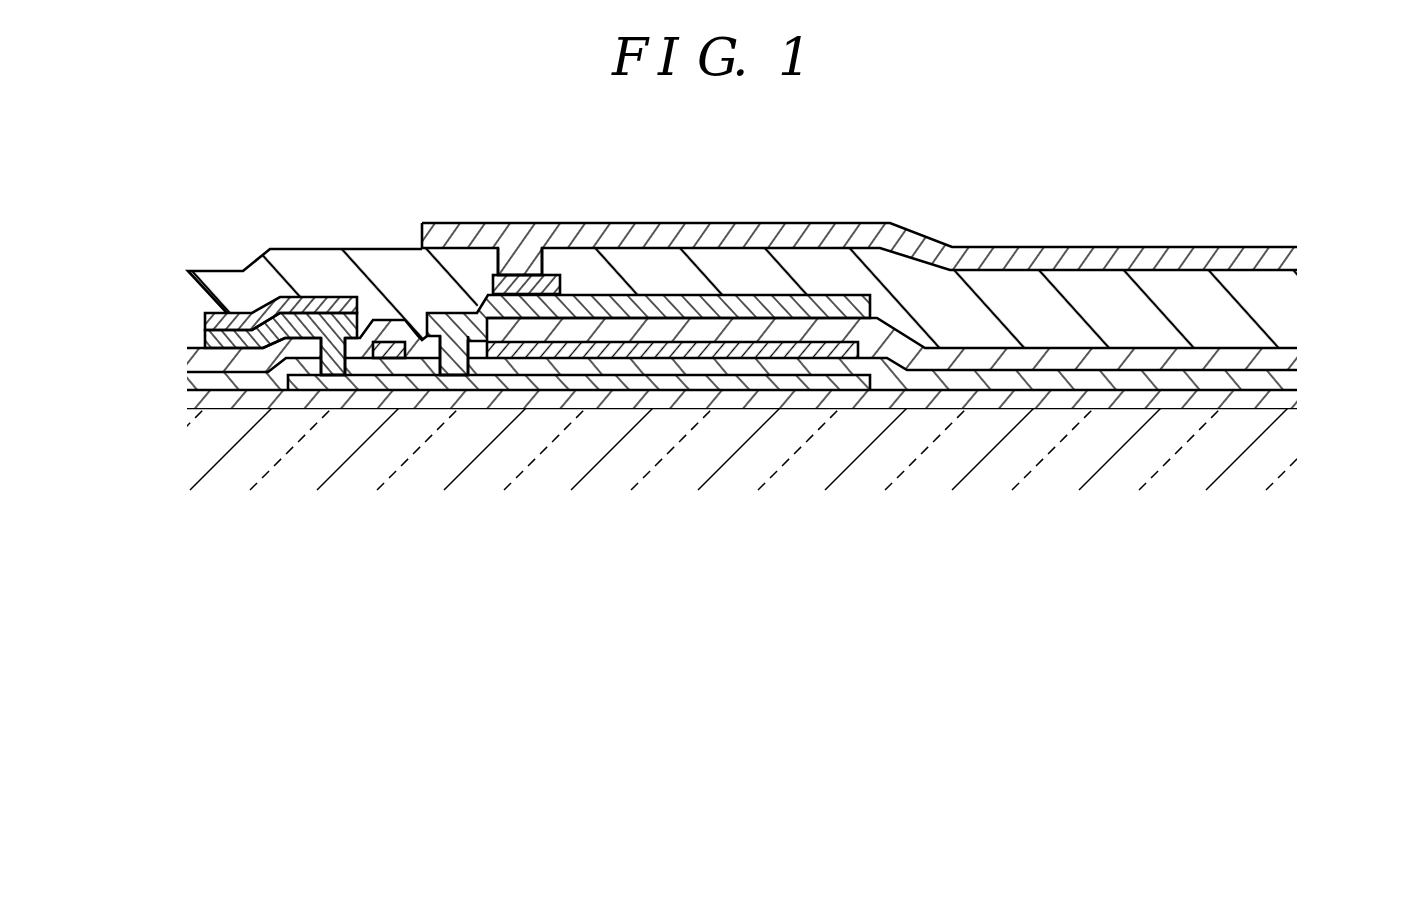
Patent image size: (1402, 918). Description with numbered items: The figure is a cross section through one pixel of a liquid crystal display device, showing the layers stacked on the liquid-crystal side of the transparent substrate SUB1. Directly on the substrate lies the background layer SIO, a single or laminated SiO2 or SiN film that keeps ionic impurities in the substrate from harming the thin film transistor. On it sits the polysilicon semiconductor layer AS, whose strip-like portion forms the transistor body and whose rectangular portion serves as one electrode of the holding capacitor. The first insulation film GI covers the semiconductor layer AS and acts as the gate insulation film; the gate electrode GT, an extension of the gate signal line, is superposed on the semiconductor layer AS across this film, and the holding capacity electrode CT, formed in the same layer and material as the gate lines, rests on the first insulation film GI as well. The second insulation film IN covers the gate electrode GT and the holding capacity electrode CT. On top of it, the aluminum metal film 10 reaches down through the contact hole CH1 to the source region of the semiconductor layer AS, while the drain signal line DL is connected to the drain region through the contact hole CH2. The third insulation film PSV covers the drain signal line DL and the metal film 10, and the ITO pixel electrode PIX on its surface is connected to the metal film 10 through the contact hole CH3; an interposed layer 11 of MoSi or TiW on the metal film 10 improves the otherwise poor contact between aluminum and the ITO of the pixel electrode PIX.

The transparent substrate SUB1 is at (197, 458).
The background layer SIO is at (1295, 398).
The first insulation film GI is at (1297, 376).
The semiconductor layer AS is at (848, 385).
The gate electrode GT is at (388, 360).
The second insulation film IN is at (203, 360).
The holding capacity electrode CT is at (592, 350).
The drain signal line DL is at (306, 297).
The metal film 10 is at (628, 295).
The interposed layer 11 is at (338, 297).
The contact hole CH1 is at (456, 345).
The contact hole CH2 is at (325, 380).
The contact hole CH3 is at (557, 275).
The third insulation film PSV is at (227, 298).
The pixel electrode PIX is at (827, 223).